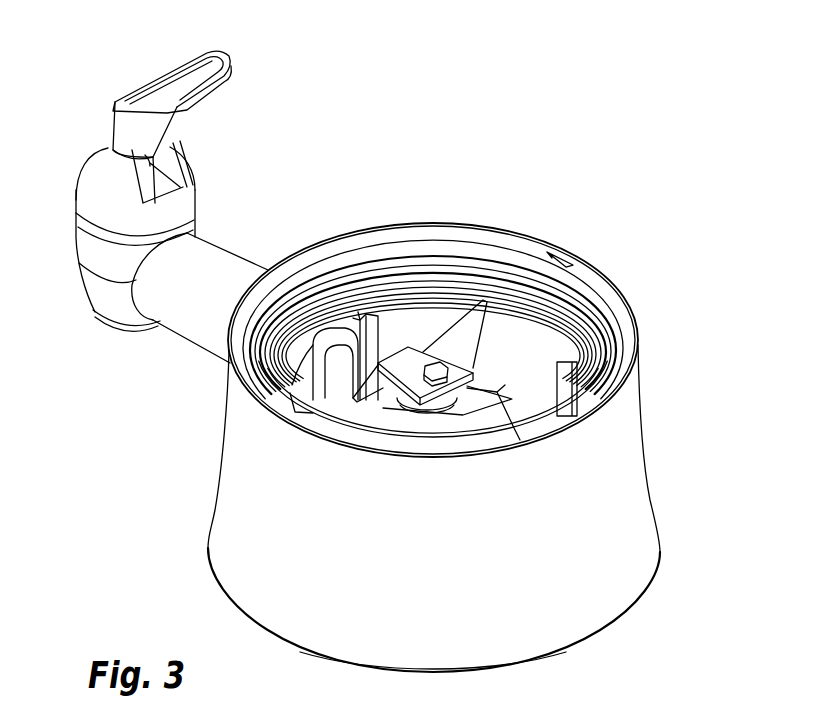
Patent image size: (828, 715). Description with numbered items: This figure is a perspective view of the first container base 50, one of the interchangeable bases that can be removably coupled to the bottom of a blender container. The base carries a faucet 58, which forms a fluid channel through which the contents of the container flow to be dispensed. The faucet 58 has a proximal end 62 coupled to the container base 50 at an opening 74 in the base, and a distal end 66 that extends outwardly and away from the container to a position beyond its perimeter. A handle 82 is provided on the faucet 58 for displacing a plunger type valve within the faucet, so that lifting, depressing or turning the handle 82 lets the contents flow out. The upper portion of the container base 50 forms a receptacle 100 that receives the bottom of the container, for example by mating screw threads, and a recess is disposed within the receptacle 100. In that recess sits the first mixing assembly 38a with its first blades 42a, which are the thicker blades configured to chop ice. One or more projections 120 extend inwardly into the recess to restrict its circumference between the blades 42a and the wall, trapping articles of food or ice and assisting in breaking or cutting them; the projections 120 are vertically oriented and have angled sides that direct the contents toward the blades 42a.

The first container base 50 is at (738, 532).
The faucet 58 is at (58, 245).
The proximal end 62 is at (228, 362).
The distal end 66 is at (90, 312).
The opening 74 is at (310, 357).
The handle 82 is at (148, 75).
The receptacle 100 is at (583, 285).
The projections 120 is at (353, 330).
The first mixing assembly 38a is at (429, 356).
The first blades 42a is at (471, 313).